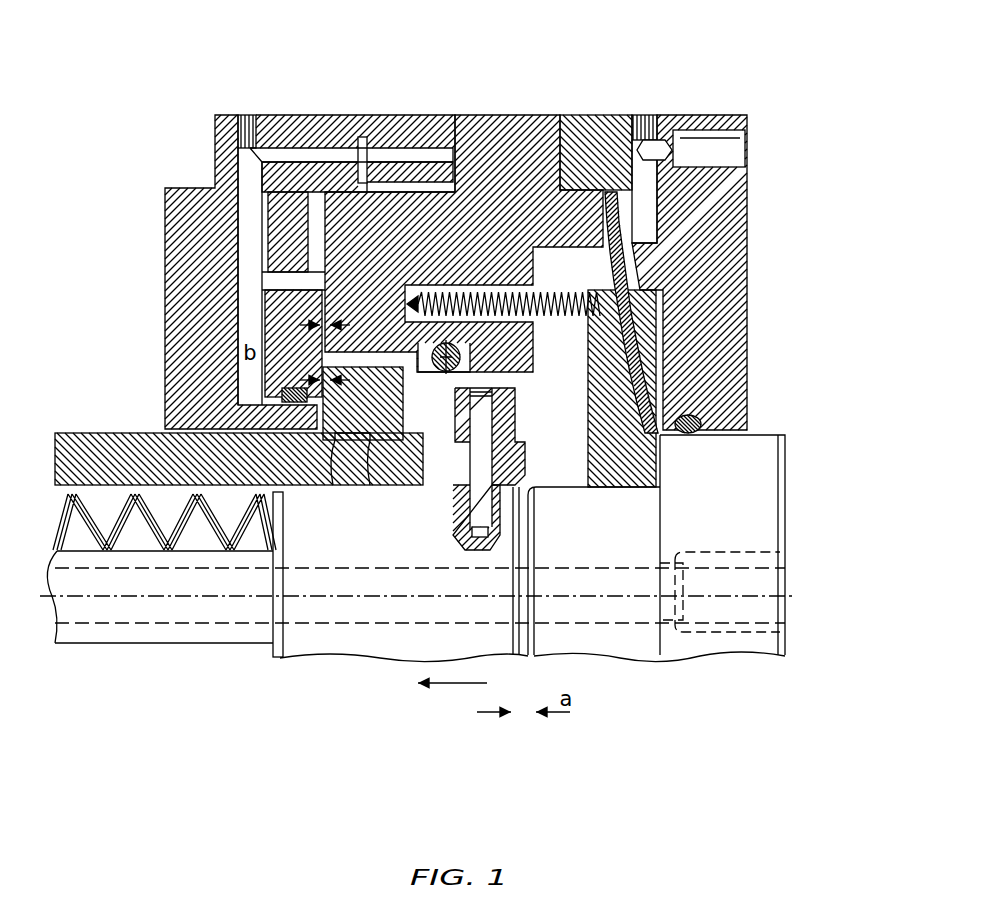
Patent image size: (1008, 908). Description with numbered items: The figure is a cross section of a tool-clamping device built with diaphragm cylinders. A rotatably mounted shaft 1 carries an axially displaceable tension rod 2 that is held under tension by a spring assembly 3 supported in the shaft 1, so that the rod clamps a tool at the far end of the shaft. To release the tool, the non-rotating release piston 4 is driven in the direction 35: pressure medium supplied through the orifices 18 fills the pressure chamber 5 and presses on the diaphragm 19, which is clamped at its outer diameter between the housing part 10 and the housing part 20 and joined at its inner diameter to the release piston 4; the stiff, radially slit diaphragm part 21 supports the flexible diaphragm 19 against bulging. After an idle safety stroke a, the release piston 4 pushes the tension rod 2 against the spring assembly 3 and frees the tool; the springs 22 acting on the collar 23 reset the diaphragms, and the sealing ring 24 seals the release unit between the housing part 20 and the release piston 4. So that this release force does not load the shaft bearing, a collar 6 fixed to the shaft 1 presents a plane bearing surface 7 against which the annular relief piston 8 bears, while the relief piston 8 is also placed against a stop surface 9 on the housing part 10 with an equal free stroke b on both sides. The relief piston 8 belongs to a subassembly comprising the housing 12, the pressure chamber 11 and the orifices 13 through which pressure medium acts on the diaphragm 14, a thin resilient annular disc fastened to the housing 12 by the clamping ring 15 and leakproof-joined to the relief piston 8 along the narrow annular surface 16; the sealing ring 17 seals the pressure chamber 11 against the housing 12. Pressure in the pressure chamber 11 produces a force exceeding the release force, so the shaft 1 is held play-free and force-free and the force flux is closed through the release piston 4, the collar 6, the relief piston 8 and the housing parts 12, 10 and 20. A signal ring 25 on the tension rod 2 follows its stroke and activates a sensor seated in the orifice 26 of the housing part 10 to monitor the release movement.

The shaft 1 is at (295, 470).
The tension rod 2 is at (85, 605).
The spring assembly 3 is at (133, 540).
The release piston 4 is at (772, 582).
The pressure chamber 5 is at (655, 265).
The collar 6 is at (368, 443).
The bearing surface 7 is at (360, 422).
The relief piston 8 is at (300, 288).
The stop surface 9 is at (200, 215).
The housing part 10 is at (530, 153).
The pressure chamber 11 is at (305, 378).
The housing 12 is at (312, 125).
The orifices 13 is at (280, 152).
The diaphragm 14 is at (283, 215).
The clamping ring 15 is at (240, 165).
The annular surface 16 is at (262, 393).
The sealing ring 17 is at (282, 408).
The orifices 18 is at (672, 123).
The diaphragm 19 is at (660, 130).
The housing part 20 is at (750, 150).
The diaphragm part 21 is at (665, 245).
The springs 22 is at (640, 300).
The collar 23 is at (655, 378).
The sealing ring 24 is at (700, 432).
The signal ring 25 is at (522, 447).
The orifice 26 is at (470, 362).
The direction 35 is at (440, 684).